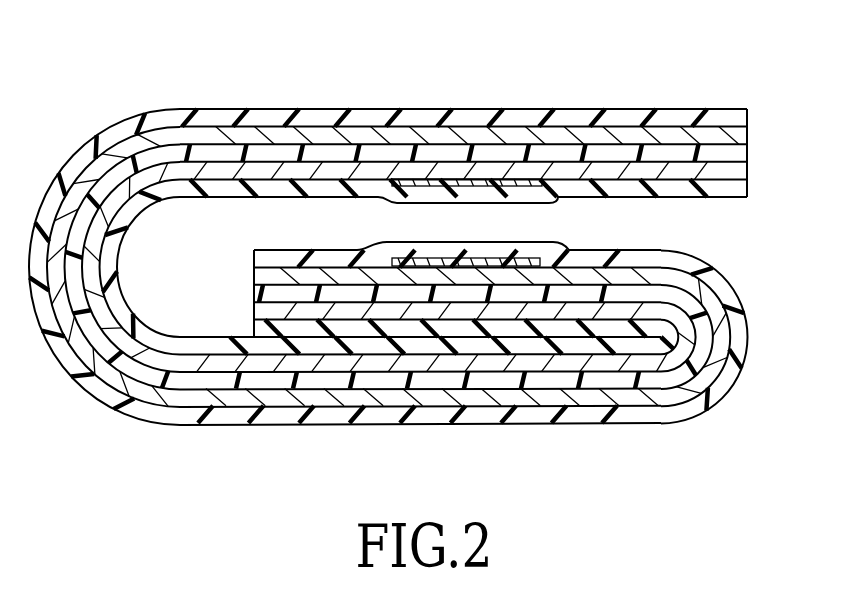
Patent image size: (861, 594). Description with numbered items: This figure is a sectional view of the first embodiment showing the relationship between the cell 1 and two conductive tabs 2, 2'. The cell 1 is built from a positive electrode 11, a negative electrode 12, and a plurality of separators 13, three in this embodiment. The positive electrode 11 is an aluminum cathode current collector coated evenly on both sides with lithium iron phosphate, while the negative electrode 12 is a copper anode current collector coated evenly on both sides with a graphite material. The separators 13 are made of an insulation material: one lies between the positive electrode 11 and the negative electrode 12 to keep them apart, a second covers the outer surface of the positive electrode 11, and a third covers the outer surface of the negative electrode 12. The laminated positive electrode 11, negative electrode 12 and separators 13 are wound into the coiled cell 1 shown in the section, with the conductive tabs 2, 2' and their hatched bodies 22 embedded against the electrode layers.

The cell 1 is at (103, 133).
The positive electrode 11 is at (223, 173).
The negative electrode 12 is at (663, 278).
The separators 13 is at (733, 188).
The first embedded element 2 is at (467, 117).
The second embedded element 2' is at (492, 365).
The hatched body of embedded element 22 is at (450, 183).